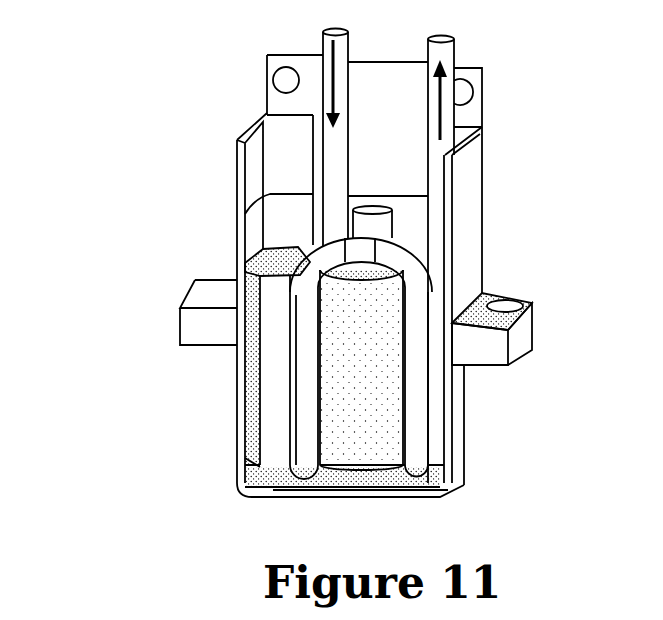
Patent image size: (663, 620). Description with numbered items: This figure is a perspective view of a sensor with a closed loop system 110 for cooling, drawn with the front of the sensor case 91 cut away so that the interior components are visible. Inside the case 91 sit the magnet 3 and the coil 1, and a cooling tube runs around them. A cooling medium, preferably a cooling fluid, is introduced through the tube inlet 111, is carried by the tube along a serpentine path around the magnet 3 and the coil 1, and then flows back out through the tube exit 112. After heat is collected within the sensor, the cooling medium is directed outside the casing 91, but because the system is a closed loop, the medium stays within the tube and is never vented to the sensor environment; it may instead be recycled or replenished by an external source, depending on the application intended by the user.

The closed loop system 110 is at (110, 215).
The tube inlet 111 is at (306, 34).
The tube exit 112 is at (468, 51).
The sensor case 91 is at (485, 348).
The magnet 3 is at (268, 430).
The coil 1 is at (400, 431).